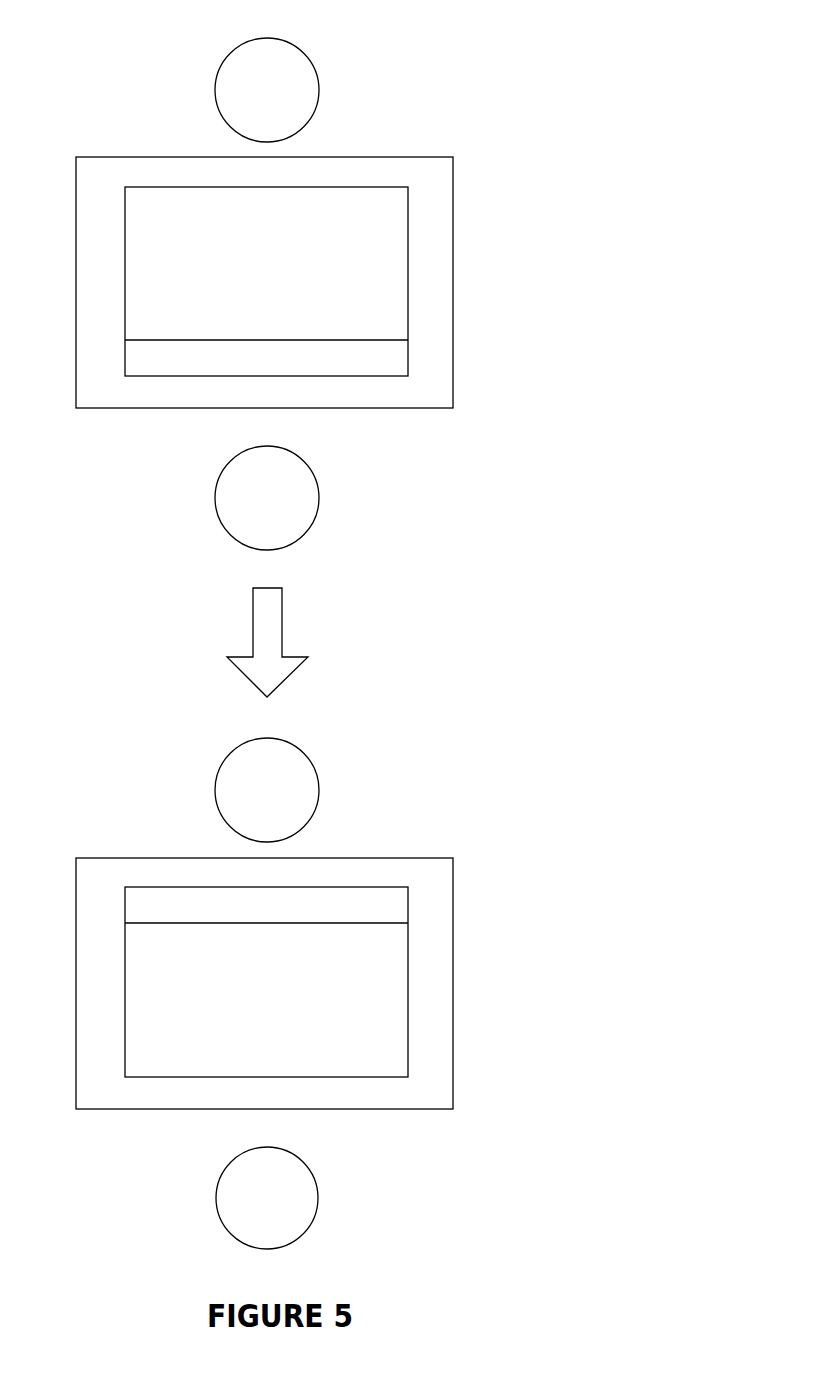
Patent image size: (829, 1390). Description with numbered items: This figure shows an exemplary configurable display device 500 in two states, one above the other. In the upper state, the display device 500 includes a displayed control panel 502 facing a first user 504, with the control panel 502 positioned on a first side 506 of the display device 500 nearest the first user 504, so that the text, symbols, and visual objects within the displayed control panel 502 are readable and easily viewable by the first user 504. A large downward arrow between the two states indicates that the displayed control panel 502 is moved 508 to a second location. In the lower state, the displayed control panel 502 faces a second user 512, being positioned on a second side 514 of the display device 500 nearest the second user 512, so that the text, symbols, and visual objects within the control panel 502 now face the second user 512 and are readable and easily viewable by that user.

The display device 500 is at (681, 122).
The displayed control panel 502 is at (392, 363).
The first user 504 is at (318, 494).
The first side 506 is at (168, 408).
The moved 508 is at (283, 622).
The second user 512 is at (317, 86).
The second side 514 is at (134, 858).